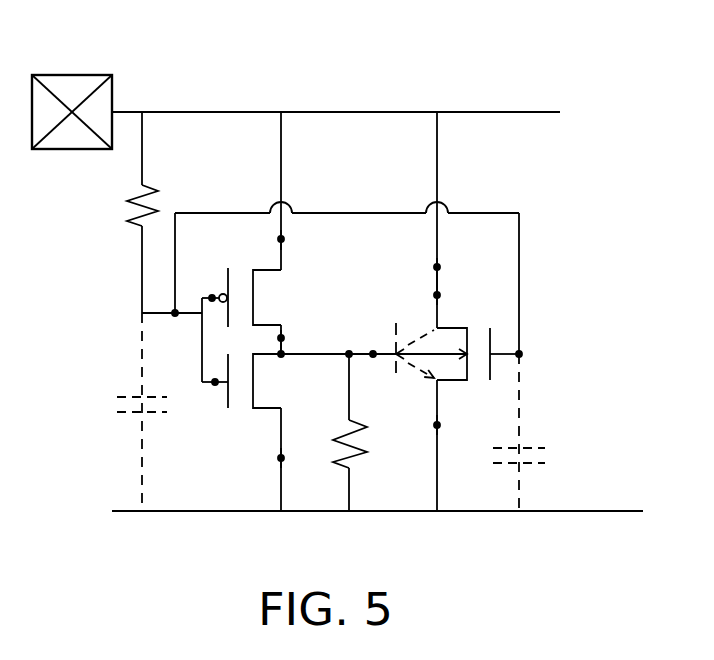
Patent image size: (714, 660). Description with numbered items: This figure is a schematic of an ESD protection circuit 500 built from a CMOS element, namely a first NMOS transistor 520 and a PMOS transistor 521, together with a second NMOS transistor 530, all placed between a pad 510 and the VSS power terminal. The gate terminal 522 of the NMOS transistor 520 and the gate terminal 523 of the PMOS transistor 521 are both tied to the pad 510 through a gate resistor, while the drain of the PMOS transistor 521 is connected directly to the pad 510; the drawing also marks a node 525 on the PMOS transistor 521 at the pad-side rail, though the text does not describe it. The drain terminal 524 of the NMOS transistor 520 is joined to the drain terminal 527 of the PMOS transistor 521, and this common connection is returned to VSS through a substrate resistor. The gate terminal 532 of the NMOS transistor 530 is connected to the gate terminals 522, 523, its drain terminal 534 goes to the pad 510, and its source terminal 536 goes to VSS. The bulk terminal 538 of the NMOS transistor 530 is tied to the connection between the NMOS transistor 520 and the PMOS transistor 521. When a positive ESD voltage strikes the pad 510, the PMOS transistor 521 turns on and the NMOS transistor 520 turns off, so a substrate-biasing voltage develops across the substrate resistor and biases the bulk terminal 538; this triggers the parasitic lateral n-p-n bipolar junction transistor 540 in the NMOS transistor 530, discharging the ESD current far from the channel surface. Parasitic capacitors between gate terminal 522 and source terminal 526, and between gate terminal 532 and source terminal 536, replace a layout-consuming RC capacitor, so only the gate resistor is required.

The ESD protection circuit 500 is at (608, 105).
The pad 510 is at (112, 88).
The first NMOS transistor 520 is at (243, 417).
The PMOS transistor 521 is at (238, 272).
The gate terminal 522 is at (245, 390).
The gate terminal 523 is at (206, 282).
The drain terminal 524 is at (303, 340).
The source node of PMOS transistor 525 is at (304, 242).
The source terminal 526 is at (305, 457).
The drain terminal 527 is at (290, 313).
The second NMOS transistor 530 is at (483, 308).
The gate terminal 532 is at (531, 353).
The drain terminal 534 is at (463, 278).
The source terminal 536 is at (461, 432).
The bulk terminal 538 is at (374, 431).
The parasitic lateral n-p-n bipolar junction transistor 540 is at (402, 302).